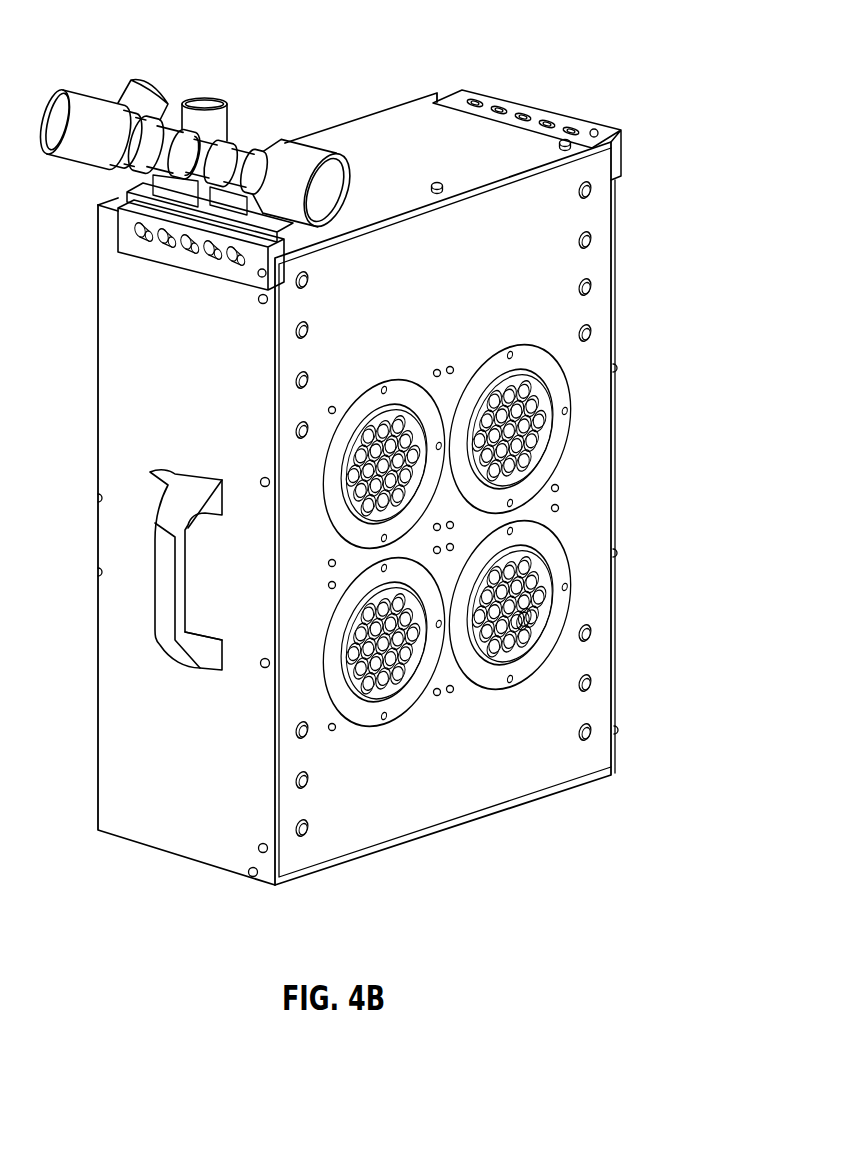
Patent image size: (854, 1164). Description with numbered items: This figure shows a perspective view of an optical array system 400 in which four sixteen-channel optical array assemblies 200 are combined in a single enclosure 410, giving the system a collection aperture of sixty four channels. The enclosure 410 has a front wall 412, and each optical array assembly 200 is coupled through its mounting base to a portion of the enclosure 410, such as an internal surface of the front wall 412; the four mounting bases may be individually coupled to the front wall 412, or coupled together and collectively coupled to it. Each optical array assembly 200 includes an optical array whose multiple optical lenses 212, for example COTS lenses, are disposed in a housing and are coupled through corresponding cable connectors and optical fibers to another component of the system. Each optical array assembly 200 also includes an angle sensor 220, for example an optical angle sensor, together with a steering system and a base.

The optical array system 400 is at (227, 47).
The enclosure 410 is at (615, 214).
The front wall 412 is at (405, 810).
The optical array assembly 200 is at (540, 437).
The optical lens 212 is at (537, 590).
The angle sensor 220 is at (525, 618).